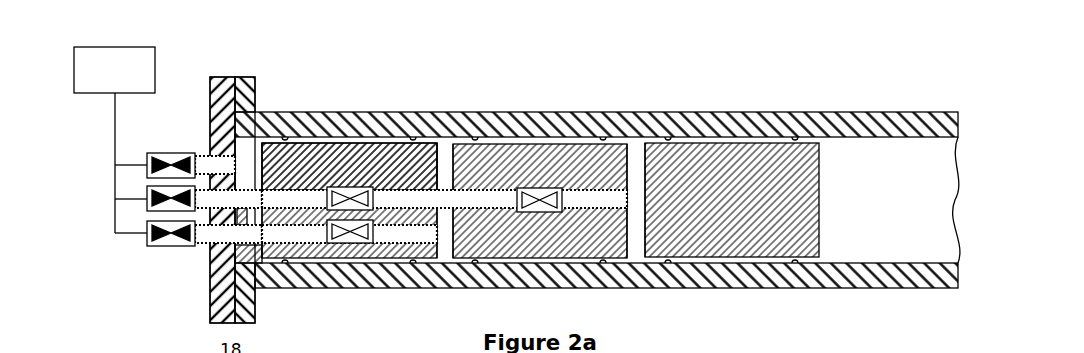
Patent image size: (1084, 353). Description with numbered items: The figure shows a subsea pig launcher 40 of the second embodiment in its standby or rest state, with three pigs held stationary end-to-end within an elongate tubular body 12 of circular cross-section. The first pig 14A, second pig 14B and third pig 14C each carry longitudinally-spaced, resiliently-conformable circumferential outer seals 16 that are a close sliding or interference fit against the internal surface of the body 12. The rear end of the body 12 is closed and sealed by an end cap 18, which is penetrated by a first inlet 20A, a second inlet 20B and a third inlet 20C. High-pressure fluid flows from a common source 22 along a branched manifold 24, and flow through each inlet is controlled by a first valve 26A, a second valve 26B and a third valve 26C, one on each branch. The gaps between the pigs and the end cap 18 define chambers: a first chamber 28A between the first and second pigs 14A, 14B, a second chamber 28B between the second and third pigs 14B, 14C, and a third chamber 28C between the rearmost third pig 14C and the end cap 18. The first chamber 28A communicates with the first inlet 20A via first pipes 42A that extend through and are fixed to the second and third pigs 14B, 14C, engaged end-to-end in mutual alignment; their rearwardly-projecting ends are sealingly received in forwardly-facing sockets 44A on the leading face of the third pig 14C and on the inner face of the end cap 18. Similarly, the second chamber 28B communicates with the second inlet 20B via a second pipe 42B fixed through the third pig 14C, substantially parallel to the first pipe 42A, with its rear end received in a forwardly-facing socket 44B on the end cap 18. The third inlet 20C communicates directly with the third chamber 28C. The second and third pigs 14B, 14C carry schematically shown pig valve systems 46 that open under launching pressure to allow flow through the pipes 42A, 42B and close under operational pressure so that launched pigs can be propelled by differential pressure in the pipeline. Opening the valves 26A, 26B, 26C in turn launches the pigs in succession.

The elongate tubular body 12 is at (527, 117).
The first pig 14A is at (745, 211).
The second pig 14B is at (558, 245).
The third pig 14C is at (368, 178).
The outer seals 16 is at (668, 138).
The end cap 18 is at (222, 77).
The first inlet 20A is at (217, 205).
The second inlet 20B is at (226, 240).
The third inlet 20C is at (211, 163).
The common source 22 is at (113, 60).
The branched manifold 24 is at (113, 176).
The first valve 26A is at (152, 201).
The second valve 26B is at (160, 242).
The third valve 26C is at (160, 158).
The first chamber 28A is at (636, 152).
The second chamber 28B is at (445, 150).
The third chamber 28C is at (253, 152).
The subsea pig launcher 40 is at (793, 76).
The first pipes 42A is at (313, 196).
The second pipe 42B is at (435, 247).
The forwardly-facing sockets 44A is at (455, 178).
The forwardly-facing socket 44B is at (240, 248).
The pig valve systems 46 is at (373, 188).